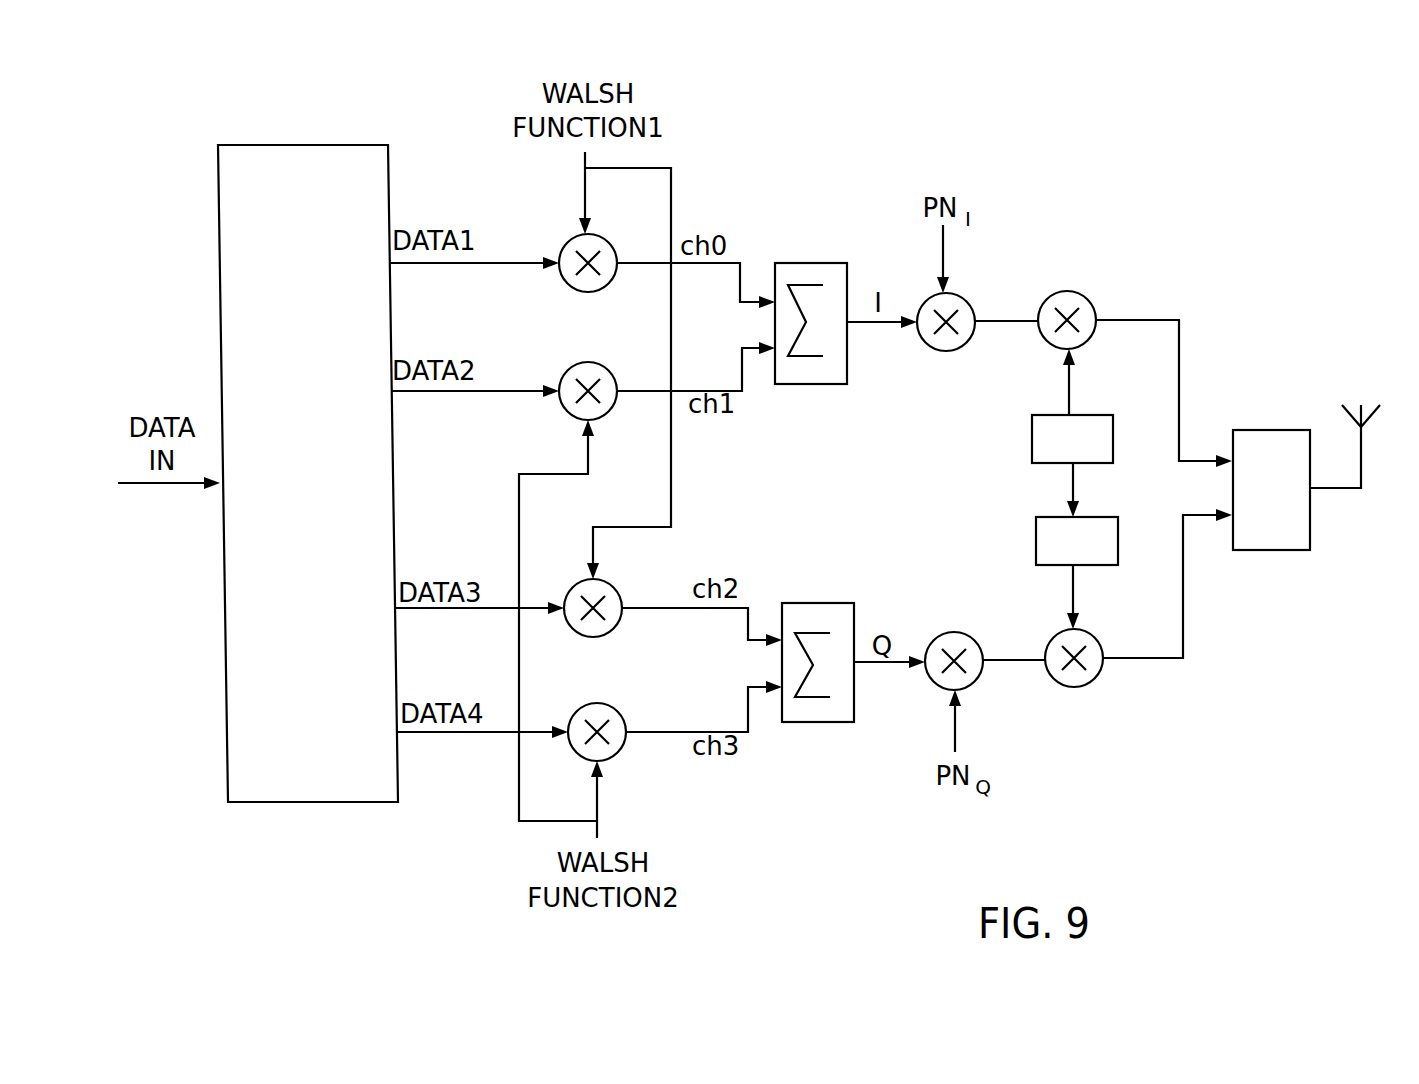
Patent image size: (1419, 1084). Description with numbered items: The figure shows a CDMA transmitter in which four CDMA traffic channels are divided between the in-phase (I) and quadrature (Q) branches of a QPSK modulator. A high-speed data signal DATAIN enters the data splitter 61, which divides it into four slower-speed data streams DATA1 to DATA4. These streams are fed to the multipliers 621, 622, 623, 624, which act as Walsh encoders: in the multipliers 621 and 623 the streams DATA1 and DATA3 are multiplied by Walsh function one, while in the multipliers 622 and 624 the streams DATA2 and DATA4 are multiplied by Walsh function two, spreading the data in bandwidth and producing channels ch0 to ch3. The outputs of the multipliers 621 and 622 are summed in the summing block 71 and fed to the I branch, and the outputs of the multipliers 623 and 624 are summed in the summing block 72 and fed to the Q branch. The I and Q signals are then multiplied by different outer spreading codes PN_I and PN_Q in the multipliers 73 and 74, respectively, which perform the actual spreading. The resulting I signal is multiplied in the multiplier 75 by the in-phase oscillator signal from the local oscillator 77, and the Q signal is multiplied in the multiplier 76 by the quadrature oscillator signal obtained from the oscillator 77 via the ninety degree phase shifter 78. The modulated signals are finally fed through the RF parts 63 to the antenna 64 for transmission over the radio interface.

The data splitter 61 is at (300, 145).
The multiplier (Walsh encoder) 621 is at (604, 241).
The multiplier (Walsh encoder) 622 is at (606, 370).
The multiplier (Walsh encoder) 623 is at (620, 630).
The multiplier (Walsh encoder) 624 is at (622, 755).
The summing block 71 is at (808, 262).
The summing block 72 is at (825, 603).
The multiplier 73 is at (952, 351).
The multiplier 74 is at (966, 631).
The multiplier 75 is at (1061, 292).
The multiplier 76 is at (1070, 688).
The local oscillator 77 is at (1032, 445).
The 90 degree phase shifter 78 is at (1036, 533).
The RF parts 63 is at (1278, 430).
The antenna 64 is at (1362, 481).